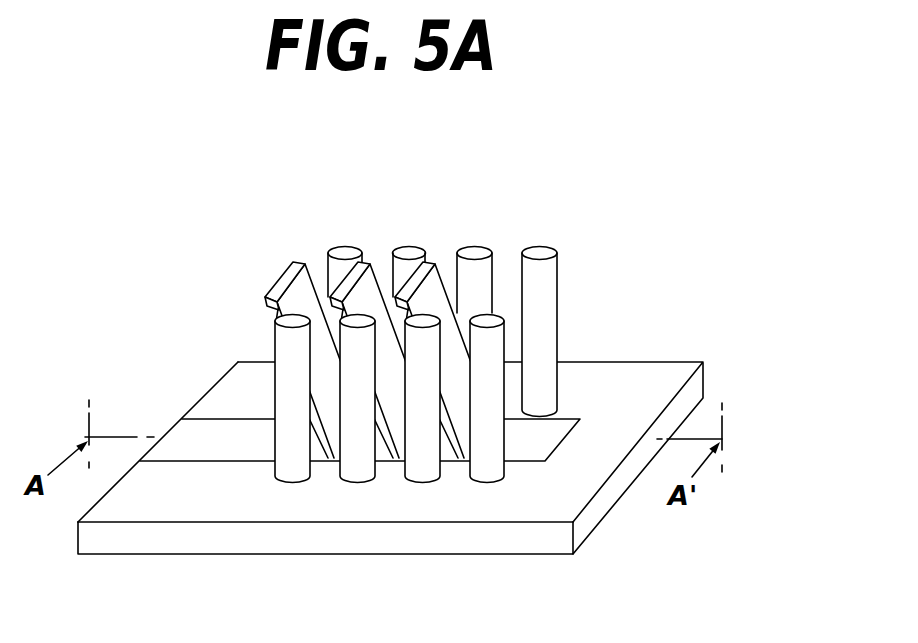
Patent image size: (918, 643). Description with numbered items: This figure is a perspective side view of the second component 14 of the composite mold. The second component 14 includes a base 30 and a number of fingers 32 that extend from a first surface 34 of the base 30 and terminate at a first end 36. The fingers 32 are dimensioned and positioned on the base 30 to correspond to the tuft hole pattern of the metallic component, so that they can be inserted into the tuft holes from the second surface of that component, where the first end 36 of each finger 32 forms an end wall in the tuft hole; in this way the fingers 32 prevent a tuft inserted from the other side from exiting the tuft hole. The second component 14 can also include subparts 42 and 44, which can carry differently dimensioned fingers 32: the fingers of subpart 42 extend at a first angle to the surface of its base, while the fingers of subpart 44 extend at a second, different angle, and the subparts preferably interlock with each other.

The second component 14 is at (227, 300).
The base 30 is at (705, 373).
The fingers 32 is at (434, 283).
The first surface 34 is at (623, 370).
The first end 36 is at (298, 260).
The subpart 42 is at (565, 505).
The subpart 44 is at (210, 433).